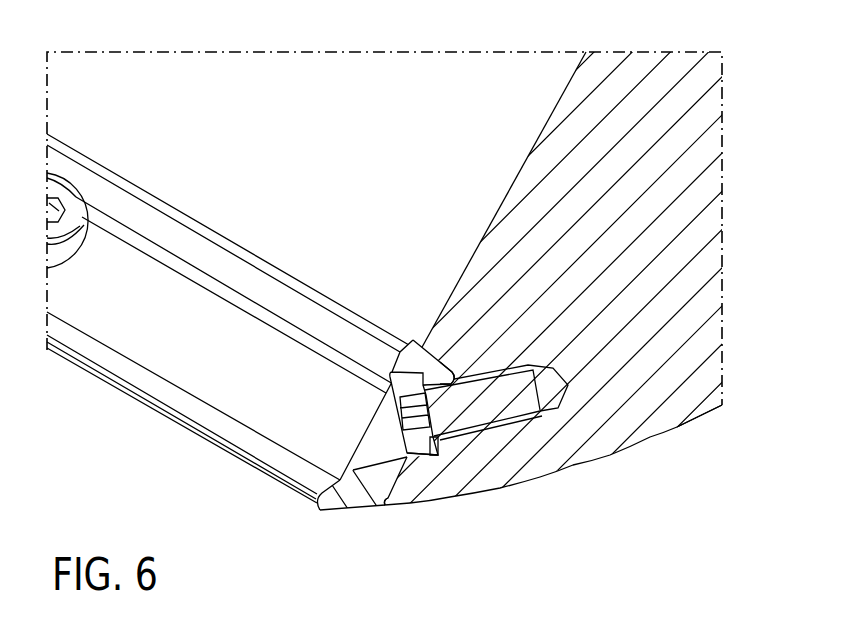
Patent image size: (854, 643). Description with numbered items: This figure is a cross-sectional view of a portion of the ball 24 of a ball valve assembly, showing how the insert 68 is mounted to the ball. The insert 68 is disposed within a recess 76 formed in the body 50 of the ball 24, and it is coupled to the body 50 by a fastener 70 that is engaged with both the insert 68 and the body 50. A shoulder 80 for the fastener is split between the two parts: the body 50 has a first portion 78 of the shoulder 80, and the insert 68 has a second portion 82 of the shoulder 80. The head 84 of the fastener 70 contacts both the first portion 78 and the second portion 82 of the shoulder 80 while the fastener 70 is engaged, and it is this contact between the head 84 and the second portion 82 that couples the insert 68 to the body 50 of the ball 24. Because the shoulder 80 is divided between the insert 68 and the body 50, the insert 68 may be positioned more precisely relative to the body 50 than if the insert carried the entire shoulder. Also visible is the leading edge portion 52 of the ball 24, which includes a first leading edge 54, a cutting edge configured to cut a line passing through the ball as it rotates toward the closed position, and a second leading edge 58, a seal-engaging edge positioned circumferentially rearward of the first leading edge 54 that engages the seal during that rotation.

The ball 24 is at (630, 485).
The body 50 is at (553, 455).
The leading edge portion 52 is at (333, 532).
The first leading edge 54 is at (318, 512).
The second leading edge 58 is at (383, 503).
The insert 68 is at (261, 406).
The fastener 70 is at (495, 398).
The recess 76 is at (437, 456).
The first portion of the shoulder 78 is at (441, 447).
The shoulder 80 is at (394, 443).
The second portion of the shoulder 82 is at (447, 373).
The head 84 is at (387, 378).